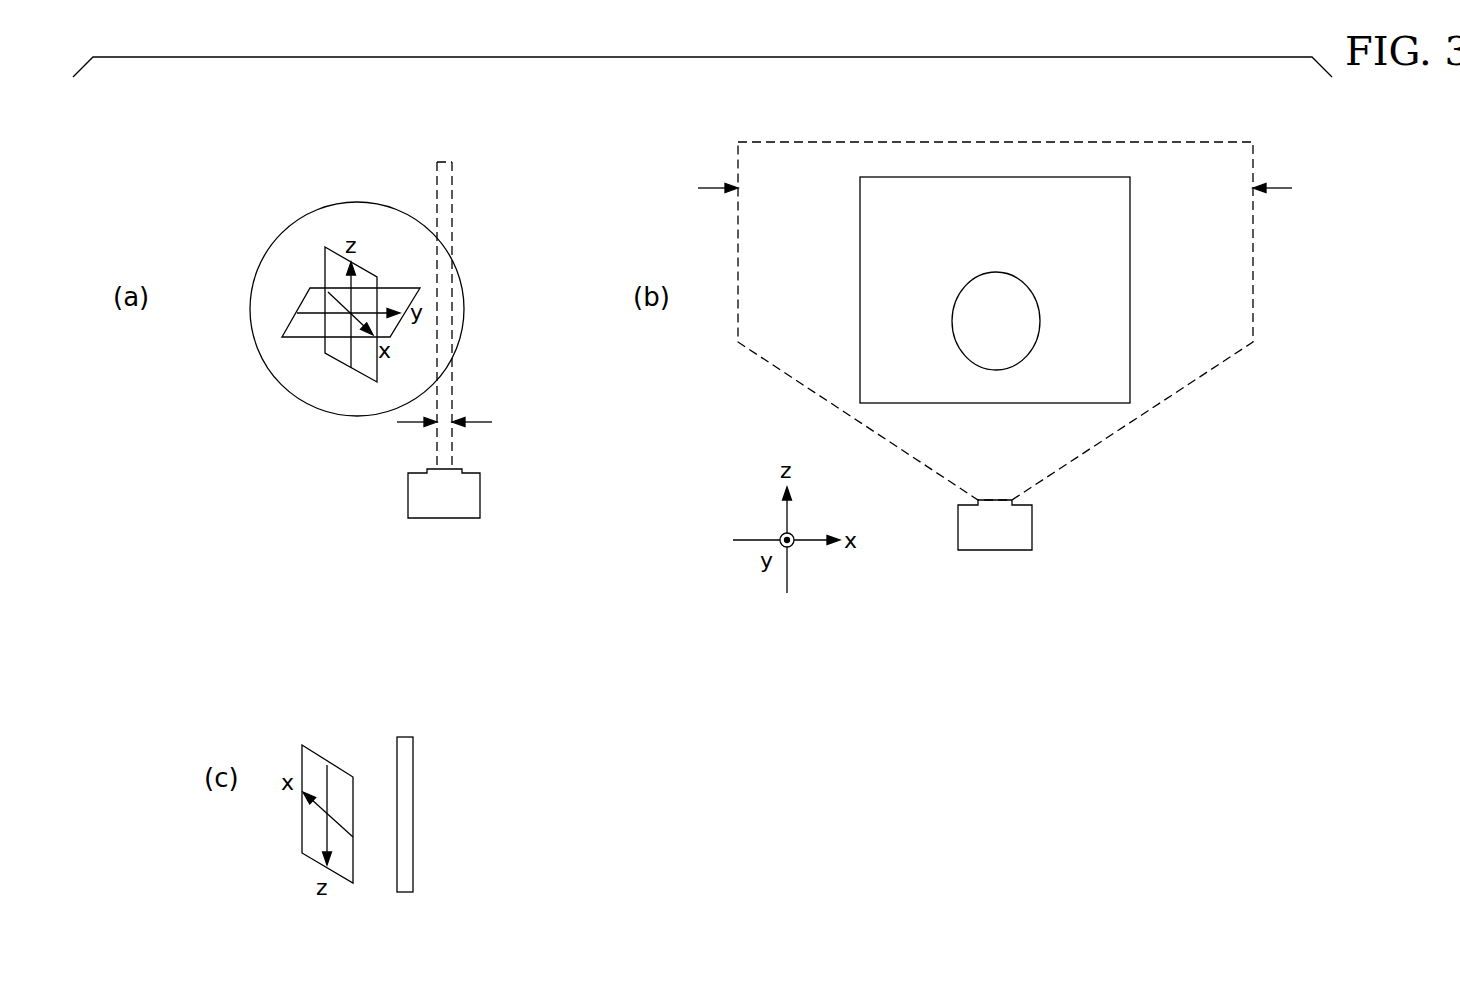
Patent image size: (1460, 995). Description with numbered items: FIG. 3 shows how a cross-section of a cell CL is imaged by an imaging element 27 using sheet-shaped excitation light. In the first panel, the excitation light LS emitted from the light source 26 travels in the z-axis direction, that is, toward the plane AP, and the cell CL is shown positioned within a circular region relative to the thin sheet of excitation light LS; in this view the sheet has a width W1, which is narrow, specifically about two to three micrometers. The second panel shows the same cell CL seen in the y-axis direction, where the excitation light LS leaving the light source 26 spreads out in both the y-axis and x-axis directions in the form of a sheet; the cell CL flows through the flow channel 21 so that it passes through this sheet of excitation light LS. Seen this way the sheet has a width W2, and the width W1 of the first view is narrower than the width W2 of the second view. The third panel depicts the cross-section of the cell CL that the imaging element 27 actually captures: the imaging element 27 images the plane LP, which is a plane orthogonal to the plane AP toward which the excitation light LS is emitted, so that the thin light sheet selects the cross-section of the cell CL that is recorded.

The flow channel 21 is at (1130, 208).
The light source 26 is at (480, 493).
The imaging element 27 is at (406, 737).
The cell CL is at (323, 203).
The plane LP is at (368, 272).
The plane AP is at (288, 322).
The excitation light LS is at (453, 183).
The width W1 is at (444, 407).
The width W2 is at (999, 176).